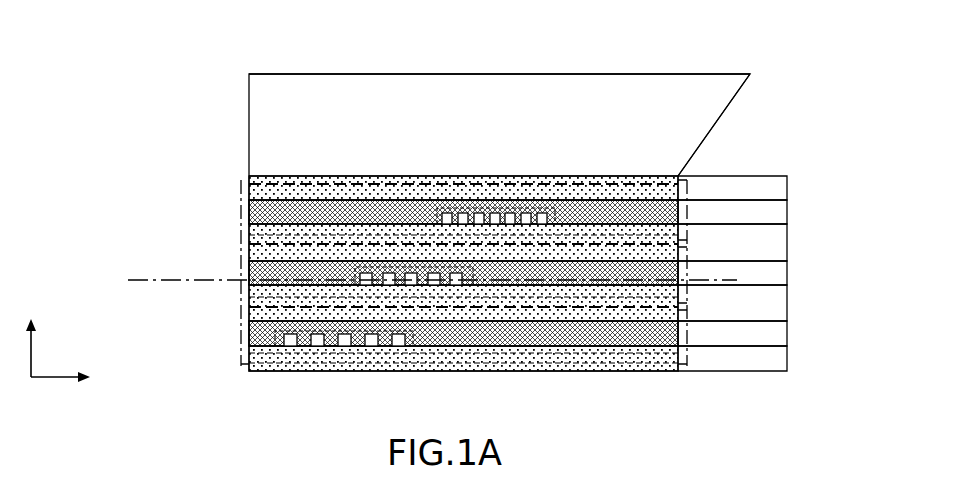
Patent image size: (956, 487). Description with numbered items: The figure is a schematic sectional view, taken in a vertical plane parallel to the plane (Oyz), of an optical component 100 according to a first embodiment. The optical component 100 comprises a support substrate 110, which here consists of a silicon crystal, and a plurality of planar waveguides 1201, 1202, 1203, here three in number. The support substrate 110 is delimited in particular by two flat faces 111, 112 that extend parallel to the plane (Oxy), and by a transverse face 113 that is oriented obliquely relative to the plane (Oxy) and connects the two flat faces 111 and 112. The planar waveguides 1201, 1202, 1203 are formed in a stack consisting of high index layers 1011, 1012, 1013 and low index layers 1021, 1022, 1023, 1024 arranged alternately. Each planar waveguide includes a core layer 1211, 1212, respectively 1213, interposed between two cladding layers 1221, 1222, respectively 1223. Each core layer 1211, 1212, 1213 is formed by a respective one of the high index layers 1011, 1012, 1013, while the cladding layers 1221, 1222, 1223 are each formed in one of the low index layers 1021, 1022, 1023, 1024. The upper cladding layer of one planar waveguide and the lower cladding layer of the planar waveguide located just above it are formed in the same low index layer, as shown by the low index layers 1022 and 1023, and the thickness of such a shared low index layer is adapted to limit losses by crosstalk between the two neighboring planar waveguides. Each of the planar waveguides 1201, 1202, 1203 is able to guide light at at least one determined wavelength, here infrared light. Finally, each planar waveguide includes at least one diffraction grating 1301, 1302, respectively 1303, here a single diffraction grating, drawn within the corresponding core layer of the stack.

The optical component 100 is at (172, 99).
The support substrate 110 is at (413, 88).
The flat face 111 is at (288, 175).
The flat face 112 is at (350, 74).
The transverse face 113 is at (727, 108).
The high index layer 1013 is at (789, 200).
The high index layer 1012 is at (789, 261).
The high index layer 1011 is at (789, 321).
The core layer 1213 is at (463, 212).
The core layer 1212 is at (463, 273).
The core layer 1211 is at (463, 333).
The low index layer 1024 is at (789, 200).
The low index layer 1023 is at (789, 224).
The low index layer 1022 is at (789, 285).
The low index layer 1021 is at (789, 346).
The planar waveguide 1203 is at (249, 184).
The planar waveguide 1202 is at (249, 246).
The planar waveguide 1201 is at (249, 308).
The cladding layers 1223 is at (247, 233).
The cladding layers 1222 is at (247, 297).
The cladding layers 1221 is at (247, 356).
The diffraction grating 1303 is at (528, 225).
The diffraction grating 1302 is at (431, 286).
The diffraction grating 1301 is at (300, 350).